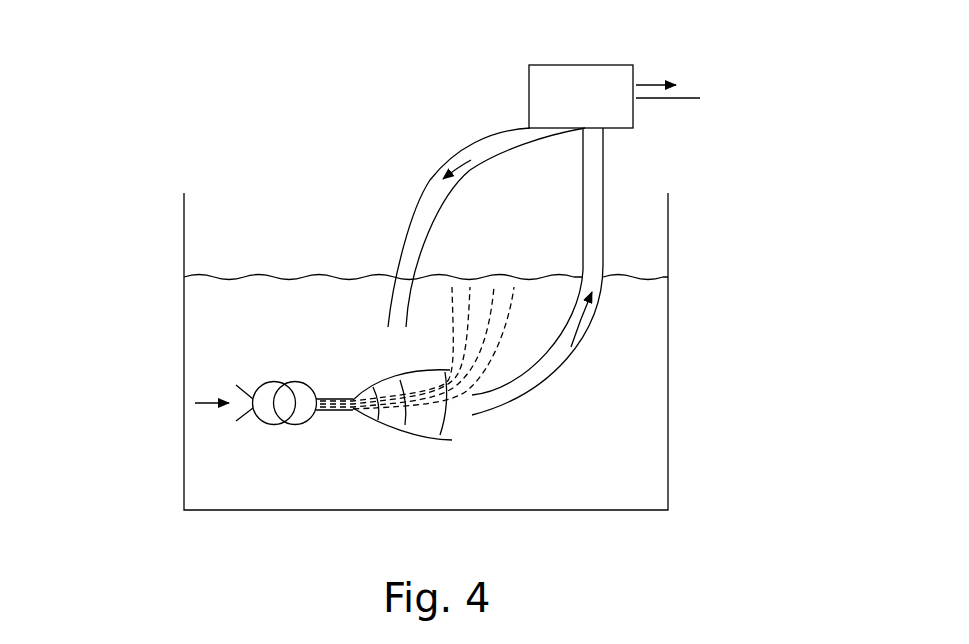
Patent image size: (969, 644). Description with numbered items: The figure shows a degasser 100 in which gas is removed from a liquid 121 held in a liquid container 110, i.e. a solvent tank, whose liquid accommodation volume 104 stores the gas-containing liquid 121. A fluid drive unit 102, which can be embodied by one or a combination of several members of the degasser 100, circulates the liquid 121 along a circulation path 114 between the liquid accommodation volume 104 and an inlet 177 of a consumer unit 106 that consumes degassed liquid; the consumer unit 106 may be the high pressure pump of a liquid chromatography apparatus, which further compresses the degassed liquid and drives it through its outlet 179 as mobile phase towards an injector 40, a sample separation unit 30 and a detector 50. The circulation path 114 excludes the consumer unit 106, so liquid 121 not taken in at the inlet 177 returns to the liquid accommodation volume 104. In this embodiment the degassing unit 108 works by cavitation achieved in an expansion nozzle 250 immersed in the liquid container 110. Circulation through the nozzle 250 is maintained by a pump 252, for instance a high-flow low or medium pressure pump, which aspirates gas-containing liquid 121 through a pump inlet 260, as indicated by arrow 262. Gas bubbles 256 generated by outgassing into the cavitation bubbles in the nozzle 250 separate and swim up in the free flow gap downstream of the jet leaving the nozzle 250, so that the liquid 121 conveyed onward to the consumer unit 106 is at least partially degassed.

The degasser 100 is at (153, 165).
The fluid drive unit 102 is at (545, 92).
The liquid accommodation volume 104 is at (352, 362).
The consumer unit 106 is at (634, 66).
The degassing unit 108 is at (363, 362).
The liquid container 110 is at (184, 300).
The circulation path 114 is at (583, 182).
The liquid 121 is at (655, 327).
The inlet 177 is at (603, 129).
The outlet 179 is at (638, 87).
The injector 40 is at (718, 99).
The sample separation unit 30 is at (718, 99).
The detector 50 is at (718, 99).
The expansion nozzle 250 is at (383, 437).
The pump 252 is at (297, 423).
The gas bubbles 256 is at (453, 283).
The pump inlet 260 is at (247, 421).
The arrow 262 is at (195, 403).